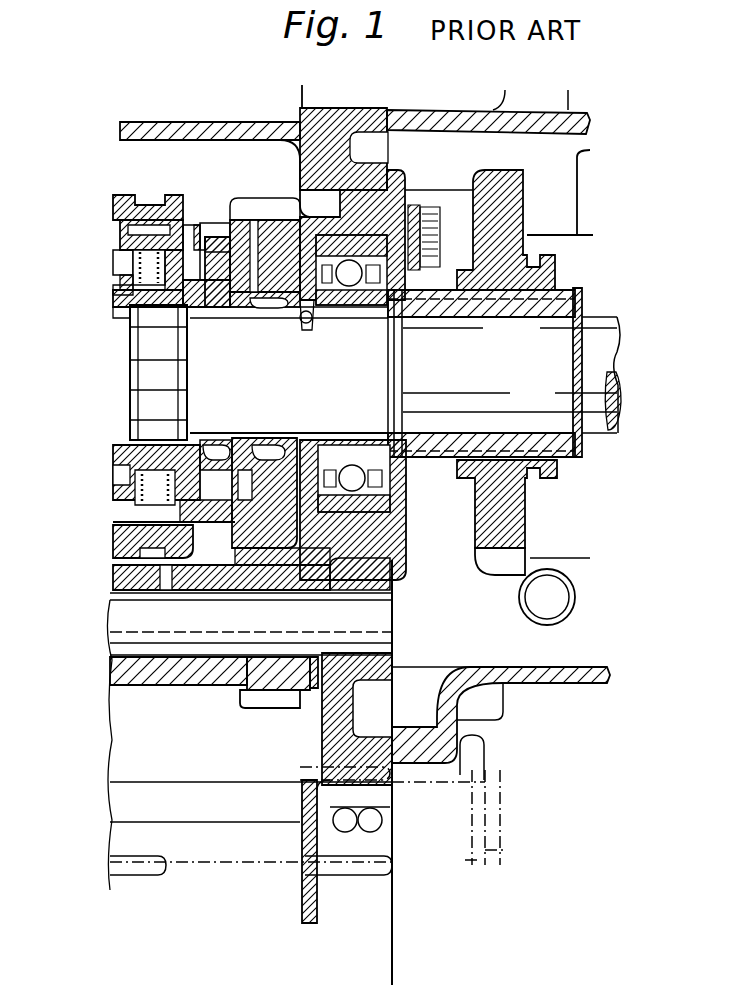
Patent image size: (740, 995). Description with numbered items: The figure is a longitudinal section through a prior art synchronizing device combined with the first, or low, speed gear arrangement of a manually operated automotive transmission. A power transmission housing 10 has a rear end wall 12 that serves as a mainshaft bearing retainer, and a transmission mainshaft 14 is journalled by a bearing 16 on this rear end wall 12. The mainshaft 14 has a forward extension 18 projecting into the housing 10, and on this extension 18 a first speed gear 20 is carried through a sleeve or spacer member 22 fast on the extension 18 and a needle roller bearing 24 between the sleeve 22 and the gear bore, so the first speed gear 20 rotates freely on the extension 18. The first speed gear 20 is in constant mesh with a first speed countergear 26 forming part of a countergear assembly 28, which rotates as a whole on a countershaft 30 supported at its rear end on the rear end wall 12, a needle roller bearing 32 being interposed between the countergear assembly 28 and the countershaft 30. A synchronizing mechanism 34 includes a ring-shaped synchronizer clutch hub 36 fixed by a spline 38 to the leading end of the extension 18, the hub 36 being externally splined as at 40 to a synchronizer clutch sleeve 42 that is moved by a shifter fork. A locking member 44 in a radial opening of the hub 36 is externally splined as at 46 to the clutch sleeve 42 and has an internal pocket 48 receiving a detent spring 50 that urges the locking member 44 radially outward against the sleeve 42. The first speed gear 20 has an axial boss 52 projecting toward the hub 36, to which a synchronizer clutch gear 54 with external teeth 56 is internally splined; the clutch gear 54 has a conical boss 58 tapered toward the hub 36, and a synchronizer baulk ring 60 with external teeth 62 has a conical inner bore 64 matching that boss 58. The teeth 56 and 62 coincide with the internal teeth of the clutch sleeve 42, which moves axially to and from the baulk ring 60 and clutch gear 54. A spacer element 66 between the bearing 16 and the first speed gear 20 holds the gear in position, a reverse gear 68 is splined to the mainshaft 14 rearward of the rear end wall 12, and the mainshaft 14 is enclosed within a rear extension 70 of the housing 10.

The power transmission housing 10 is at (265, 122).
The rear end wall 12 is at (408, 541).
The transmission mainshaft 14 is at (590, 430).
The bearing 16 is at (392, 478).
The forward extension 18 is at (160, 390).
The first speed gear 20 is at (282, 198).
The sleeve or spacer member 22 is at (213, 310).
The needle roller bearing 24 is at (275, 308).
The first speed countergear 26 is at (232, 695).
The countergear assembly 28 is at (132, 687).
The countershaft 30 is at (188, 642).
The needle roller bearing 32 is at (270, 670).
The synchronizing mechanism 34 is at (107, 525).
The synchronizer clutch hub 36 is at (125, 310).
The spline 38 is at (170, 292).
The external spline 40 is at (118, 498).
The synchronizer clutch sleeve 42 is at (127, 193).
The locking member 44 is at (120, 240).
The external spline 46 is at (118, 205).
The pocket or concavity 48 is at (118, 266).
The detent spring 50 is at (115, 288).
The axial boss 52 is at (232, 310).
The synchronizer clutch gear 54 is at (245, 198).
The external teeth 56 is at (222, 223).
The conical boss 58 is at (150, 288).
The synchronizer baulk ring 60 is at (186, 225).
The external teeth 62 is at (197, 225).
The inner bore 64 is at (200, 310).
The spacer element 66 is at (316, 317).
The reverse gear 68 is at (525, 518).
The rear extension 70 is at (445, 110).